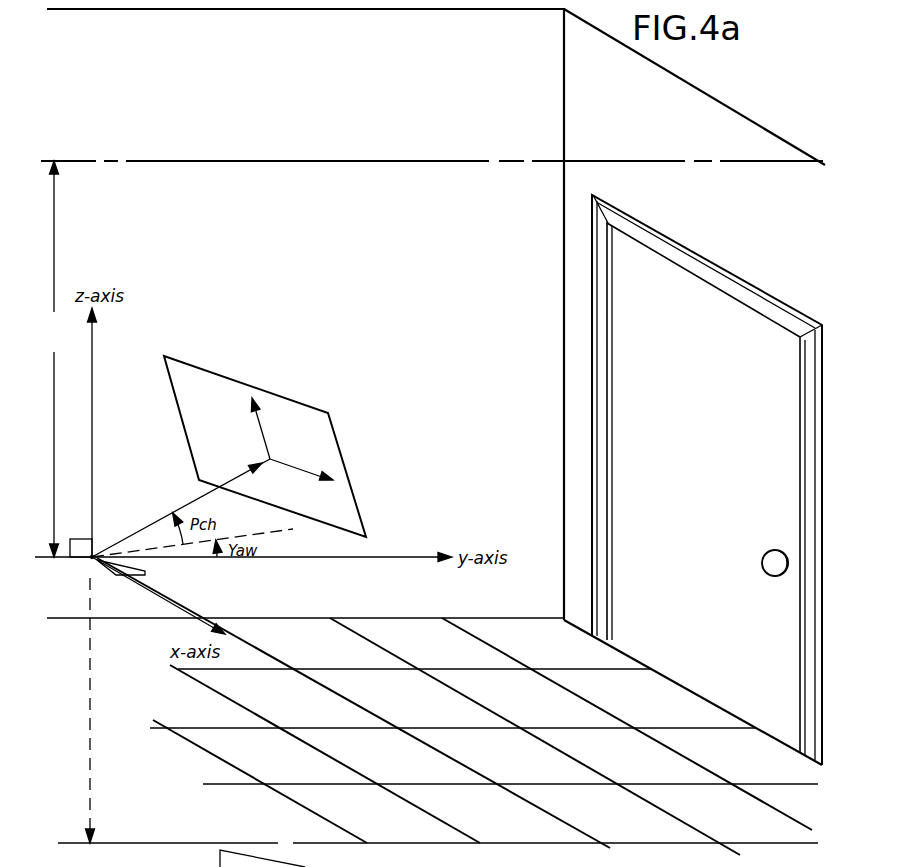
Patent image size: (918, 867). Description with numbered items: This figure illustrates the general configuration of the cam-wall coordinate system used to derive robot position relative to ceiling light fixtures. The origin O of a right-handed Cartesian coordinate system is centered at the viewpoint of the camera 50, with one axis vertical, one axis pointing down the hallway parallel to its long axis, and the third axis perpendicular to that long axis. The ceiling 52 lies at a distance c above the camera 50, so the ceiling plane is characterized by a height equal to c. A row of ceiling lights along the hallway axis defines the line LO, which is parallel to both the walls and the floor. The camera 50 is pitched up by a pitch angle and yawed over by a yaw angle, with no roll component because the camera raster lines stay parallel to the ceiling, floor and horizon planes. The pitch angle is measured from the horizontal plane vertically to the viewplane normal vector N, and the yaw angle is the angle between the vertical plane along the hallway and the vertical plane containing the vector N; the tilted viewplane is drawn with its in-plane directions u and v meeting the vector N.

The camera 50 is at (96, 548).
The ceiling 52 is at (58, 163).
The line of ceiling lights LO is at (347, 165).
The distance from camera to ceiling c is at (53, 359).
The origin O is at (84, 566).
The viewplane normal vector N is at (181, 508).
The image plane u axis u is at (301, 470).
The image plane v axis v is at (256, 428).